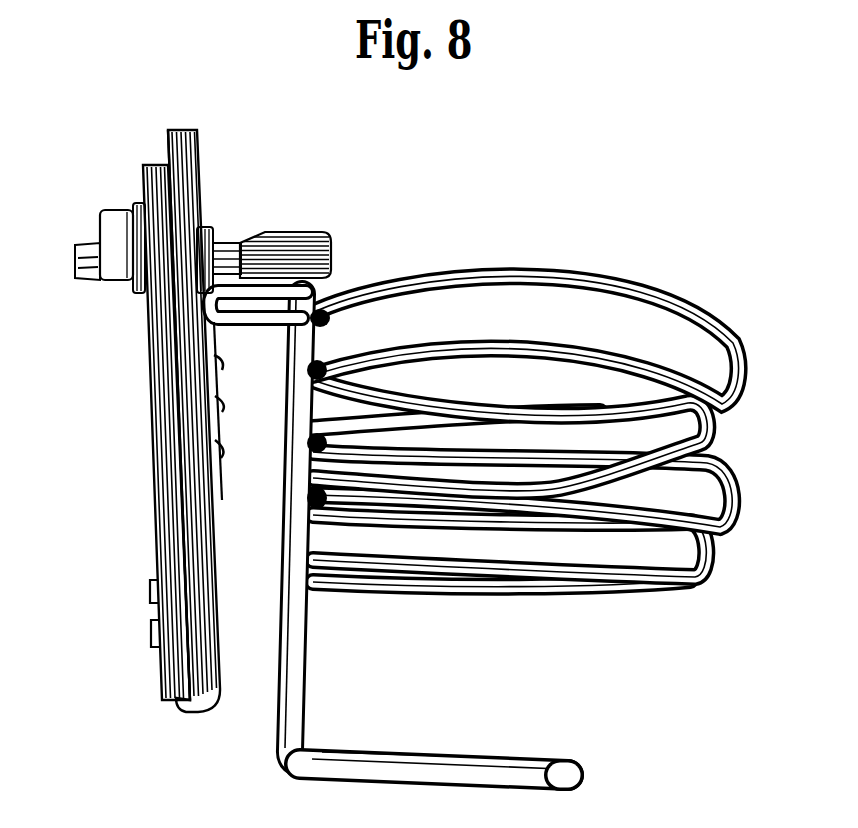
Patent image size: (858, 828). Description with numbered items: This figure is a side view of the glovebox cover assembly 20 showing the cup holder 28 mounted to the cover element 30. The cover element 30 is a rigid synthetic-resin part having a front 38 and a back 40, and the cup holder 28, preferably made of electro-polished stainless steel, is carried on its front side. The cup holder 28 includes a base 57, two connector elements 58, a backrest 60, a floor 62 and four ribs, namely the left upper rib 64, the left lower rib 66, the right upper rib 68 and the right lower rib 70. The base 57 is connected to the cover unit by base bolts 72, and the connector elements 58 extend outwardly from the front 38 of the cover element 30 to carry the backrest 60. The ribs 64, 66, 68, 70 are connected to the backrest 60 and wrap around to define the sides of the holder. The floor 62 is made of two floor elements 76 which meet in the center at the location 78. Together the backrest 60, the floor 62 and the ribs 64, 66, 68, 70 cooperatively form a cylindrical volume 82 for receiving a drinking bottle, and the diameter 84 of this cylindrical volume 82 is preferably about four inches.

The glovebox cover assembly 20 is at (510, 450).
The cup holder 28 is at (559, 363).
The cover element 30 is at (191, 131).
The front 38 is at (230, 183).
The back 40 is at (126, 190).
The base 57 is at (224, 405).
The connector elements 58 is at (222, 321).
The backrest 60 is at (327, 659).
The floor 62 is at (479, 758).
The left upper rib 64 is at (557, 300).
The left lower rib 66 is at (742, 490).
The right upper rib 68 is at (708, 428).
The right lower rib 70 is at (696, 579).
The base bolts 72 is at (224, 456).
The floor elements 76 is at (349, 748).
The center meeting point 78 is at (608, 770).
The cylindrical volume 82 is at (517, 245).
The diameter 84 is at (722, 631).